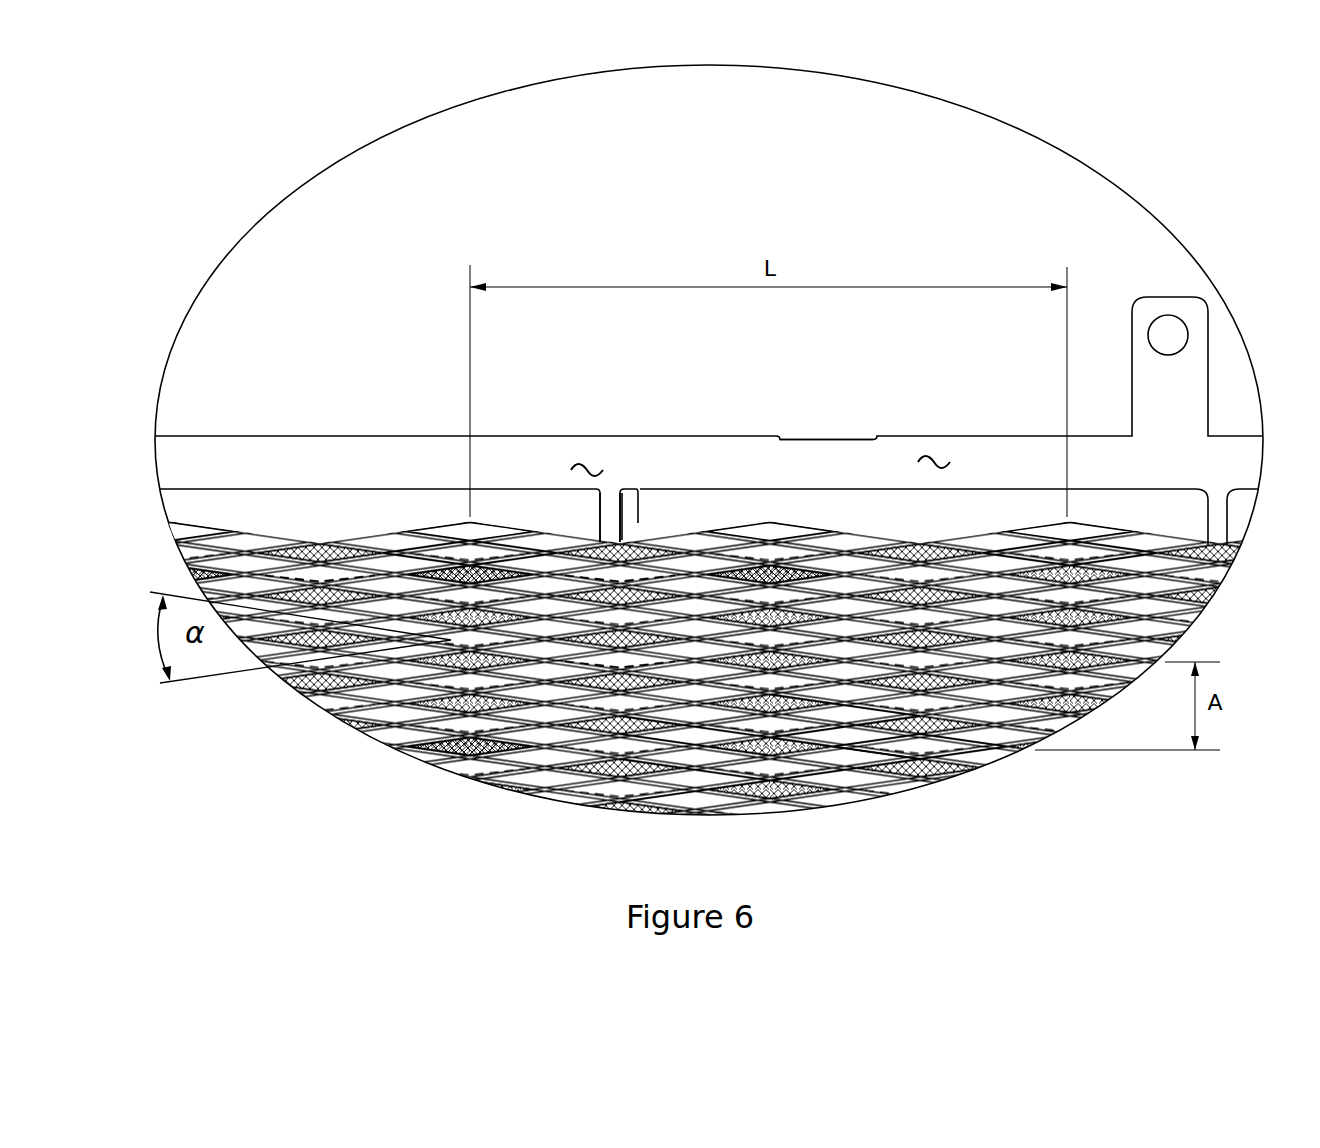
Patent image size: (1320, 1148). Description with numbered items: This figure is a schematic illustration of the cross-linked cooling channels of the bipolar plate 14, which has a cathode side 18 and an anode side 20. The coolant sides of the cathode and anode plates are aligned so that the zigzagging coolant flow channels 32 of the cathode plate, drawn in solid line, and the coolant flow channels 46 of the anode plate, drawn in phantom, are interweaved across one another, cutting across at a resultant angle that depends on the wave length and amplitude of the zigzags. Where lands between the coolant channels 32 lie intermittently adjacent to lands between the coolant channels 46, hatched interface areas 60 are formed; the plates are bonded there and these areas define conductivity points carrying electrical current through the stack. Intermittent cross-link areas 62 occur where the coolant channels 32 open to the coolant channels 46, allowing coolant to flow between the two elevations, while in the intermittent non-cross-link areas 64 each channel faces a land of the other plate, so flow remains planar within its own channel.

The bipolar plate 14 is at (690, 432).
The cathode side 18 is at (948, 450).
The anode side 20 is at (590, 460).
The coolant flow channels 32 is at (207, 545).
The coolant flow channels 46 is at (447, 545).
The interface area 60 is at (900, 720).
The cross-link areas 62 is at (330, 575).
The non-cross-link areas 64 is at (690, 780).